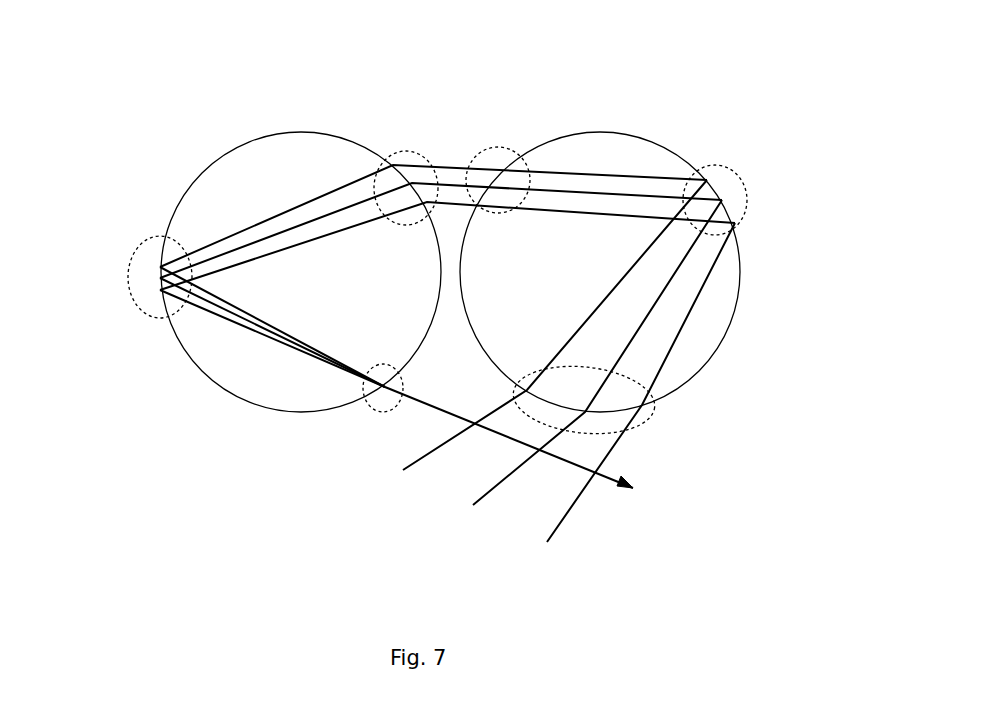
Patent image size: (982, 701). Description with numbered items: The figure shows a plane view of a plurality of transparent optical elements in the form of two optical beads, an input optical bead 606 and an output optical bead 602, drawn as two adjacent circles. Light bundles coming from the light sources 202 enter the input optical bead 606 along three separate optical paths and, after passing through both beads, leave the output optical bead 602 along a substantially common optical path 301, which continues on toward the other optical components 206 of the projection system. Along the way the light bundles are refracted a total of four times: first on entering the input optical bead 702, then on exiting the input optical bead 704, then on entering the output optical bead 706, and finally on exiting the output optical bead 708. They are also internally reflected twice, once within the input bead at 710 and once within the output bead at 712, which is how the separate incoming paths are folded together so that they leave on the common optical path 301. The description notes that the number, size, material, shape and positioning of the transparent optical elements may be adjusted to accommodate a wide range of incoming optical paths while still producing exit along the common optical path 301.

The output optical bead 602 is at (230, 150).
The input optical bead 606 is at (663, 145).
The entering the input optical bead 702 is at (655, 411).
The exiting the input optical bead 704 is at (503, 148).
The entering the output optical bead 706 is at (397, 150).
The exiting the output optical bead 708 is at (380, 412).
The internal reflection 710 is at (723, 167).
The internal reflection 712 is at (150, 238).
The substantially common optical path 301 is at (605, 477).
The light sources 202 is at (406, 554).
The other optical components 206 is at (619, 361).